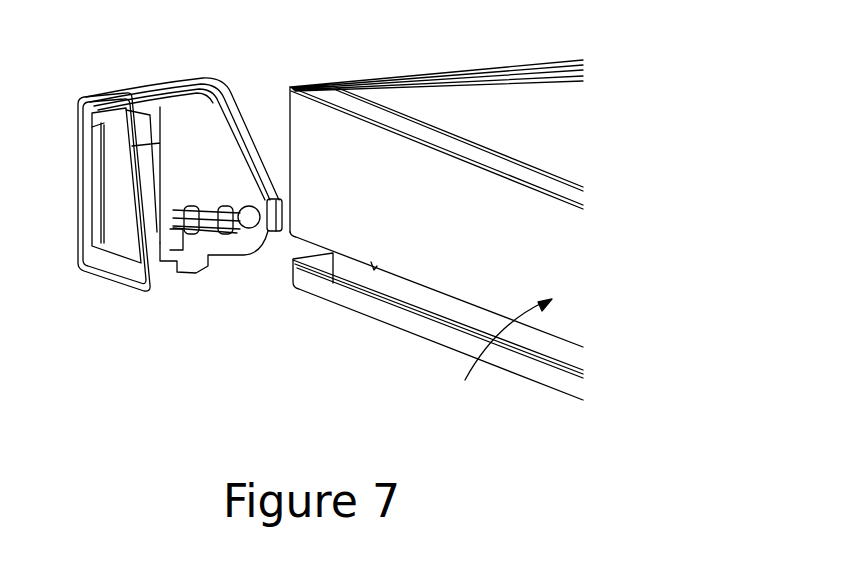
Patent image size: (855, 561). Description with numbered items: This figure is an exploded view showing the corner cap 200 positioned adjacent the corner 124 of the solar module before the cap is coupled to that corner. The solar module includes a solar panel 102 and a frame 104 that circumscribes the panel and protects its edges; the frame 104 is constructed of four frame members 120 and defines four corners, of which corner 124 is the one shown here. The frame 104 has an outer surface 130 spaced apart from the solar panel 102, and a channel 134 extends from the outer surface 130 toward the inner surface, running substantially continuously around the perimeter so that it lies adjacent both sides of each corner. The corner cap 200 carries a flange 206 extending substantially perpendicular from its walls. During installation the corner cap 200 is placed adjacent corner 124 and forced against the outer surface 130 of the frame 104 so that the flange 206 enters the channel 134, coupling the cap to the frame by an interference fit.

The solar panel 102 is at (517, 115).
The frame 104 is at (442, 72).
The corner 124 is at (290, 87).
The frame member 120 is at (470, 278).
The outer surface 130 is at (497, 359).
The channel 134 is at (374, 288).
The corner cap 200 is at (130, 86).
The flange 206 is at (214, 221).